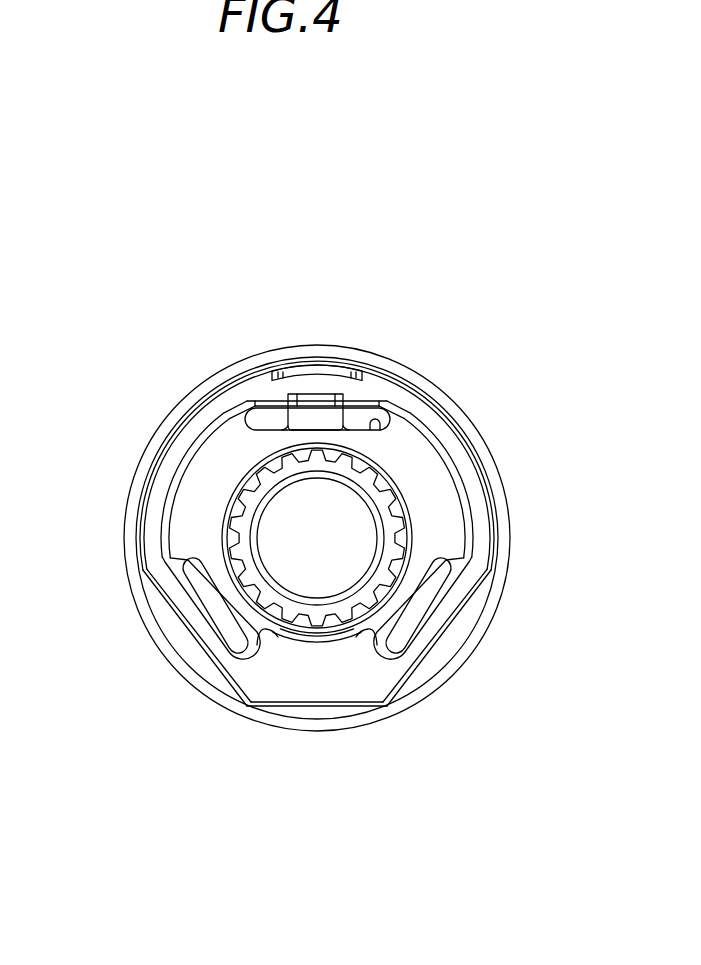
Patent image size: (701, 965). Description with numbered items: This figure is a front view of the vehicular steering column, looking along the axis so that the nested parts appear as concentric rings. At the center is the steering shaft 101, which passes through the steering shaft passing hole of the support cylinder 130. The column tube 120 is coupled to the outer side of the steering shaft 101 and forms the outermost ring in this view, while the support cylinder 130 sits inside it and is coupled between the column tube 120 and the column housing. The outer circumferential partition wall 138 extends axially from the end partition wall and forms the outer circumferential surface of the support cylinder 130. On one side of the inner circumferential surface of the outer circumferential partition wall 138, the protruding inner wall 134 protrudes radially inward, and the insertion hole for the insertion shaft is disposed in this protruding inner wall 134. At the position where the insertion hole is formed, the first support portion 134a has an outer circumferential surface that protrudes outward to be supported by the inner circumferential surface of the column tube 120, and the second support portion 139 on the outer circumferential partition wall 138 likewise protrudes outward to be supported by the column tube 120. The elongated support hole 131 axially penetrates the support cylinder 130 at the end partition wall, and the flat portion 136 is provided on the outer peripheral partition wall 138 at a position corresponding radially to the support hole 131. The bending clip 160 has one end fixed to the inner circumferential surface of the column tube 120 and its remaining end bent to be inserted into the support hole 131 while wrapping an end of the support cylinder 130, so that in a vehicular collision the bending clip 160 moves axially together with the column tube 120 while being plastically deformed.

The steering shaft 101 is at (241, 522).
The column tube 120 is at (130, 575).
The support cylinder 130 is at (483, 528).
The support hole 131 is at (377, 423).
The protruding inner wall 134 is at (302, 677).
The first support portion 134a is at (318, 707).
The flat portion 136 is at (267, 392).
The outer circumferential partition wall 138 is at (150, 510).
The second support portion 139 is at (197, 402).
The bending clip 160 is at (325, 417).